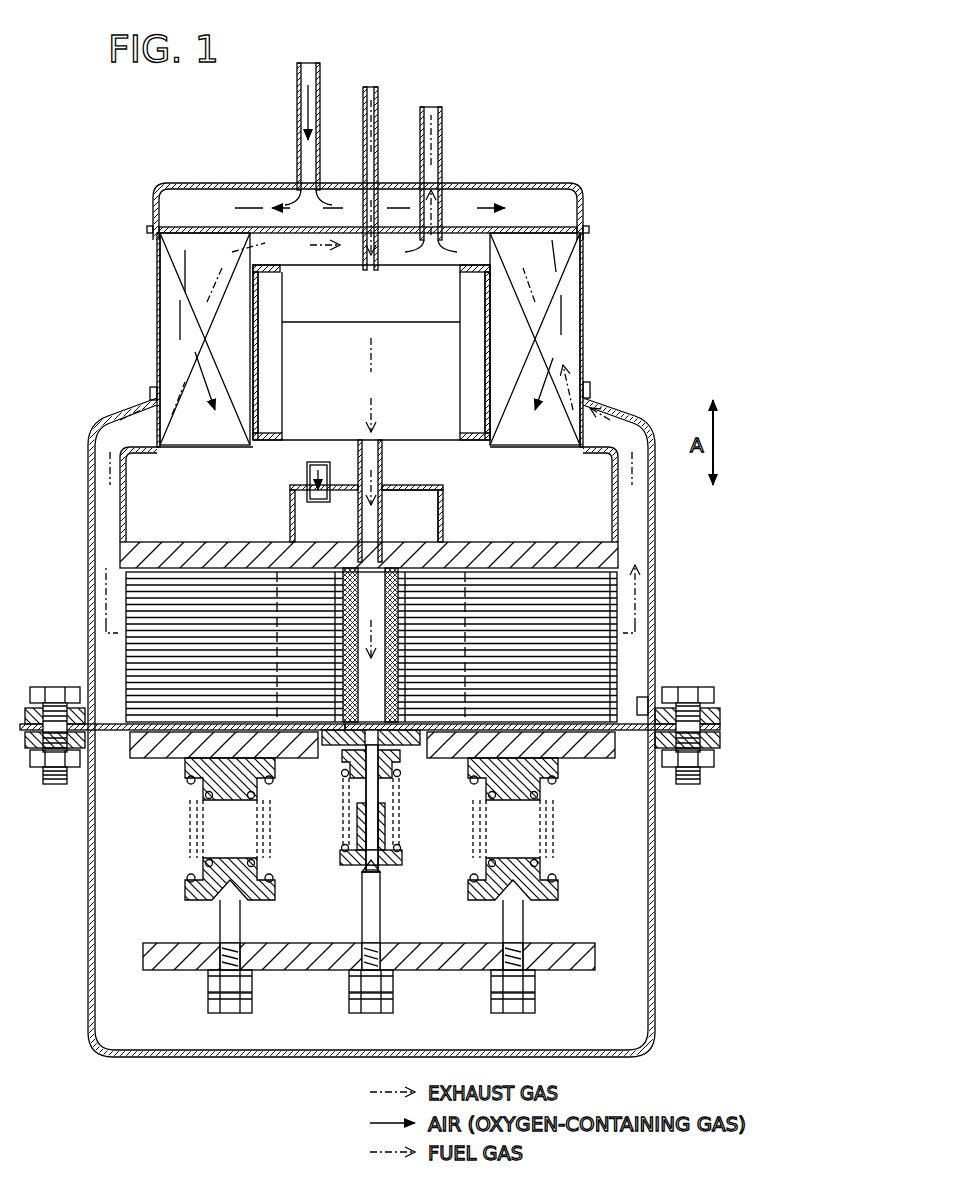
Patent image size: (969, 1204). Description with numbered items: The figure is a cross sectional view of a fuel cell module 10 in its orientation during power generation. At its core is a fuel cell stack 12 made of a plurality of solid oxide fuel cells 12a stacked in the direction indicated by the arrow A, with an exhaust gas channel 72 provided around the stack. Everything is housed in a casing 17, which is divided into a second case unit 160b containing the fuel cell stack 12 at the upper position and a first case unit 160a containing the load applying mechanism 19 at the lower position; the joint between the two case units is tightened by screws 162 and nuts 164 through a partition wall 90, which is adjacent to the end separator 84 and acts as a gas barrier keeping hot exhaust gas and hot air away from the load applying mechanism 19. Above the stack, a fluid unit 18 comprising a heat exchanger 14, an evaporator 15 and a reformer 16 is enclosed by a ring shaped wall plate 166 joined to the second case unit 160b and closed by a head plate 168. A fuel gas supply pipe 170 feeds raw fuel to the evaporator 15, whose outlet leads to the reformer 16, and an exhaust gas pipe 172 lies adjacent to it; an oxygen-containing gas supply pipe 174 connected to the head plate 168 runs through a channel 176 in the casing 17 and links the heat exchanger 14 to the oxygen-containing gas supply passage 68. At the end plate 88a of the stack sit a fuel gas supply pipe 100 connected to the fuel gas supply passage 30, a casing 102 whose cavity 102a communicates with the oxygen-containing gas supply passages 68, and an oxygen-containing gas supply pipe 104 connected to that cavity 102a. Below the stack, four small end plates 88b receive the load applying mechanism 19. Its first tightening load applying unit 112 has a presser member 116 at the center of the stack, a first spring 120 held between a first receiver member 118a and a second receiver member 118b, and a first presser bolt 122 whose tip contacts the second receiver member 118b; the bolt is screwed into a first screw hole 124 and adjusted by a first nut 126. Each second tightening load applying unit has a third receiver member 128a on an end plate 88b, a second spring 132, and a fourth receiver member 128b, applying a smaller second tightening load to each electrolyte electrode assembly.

The fuel cell module 10 is at (337, 576).
The fuel cell stack 12 is at (120, 605).
The solid oxide fuel cell 12a is at (615, 673).
The heat exchanger 14 is at (180, 257).
The evaporator 15 is at (320, 297).
The reformer 16 is at (290, 338).
The casing 17 is at (141, 393).
The fluid unit 18 is at (101, 242).
The load applying mechanism 19 is at (144, 977).
The fuel gas supply passage 30 is at (365, 590).
The oxygen-containing gas supply passage 68 is at (410, 516).
The exhaust gas channel 72 is at (650, 645).
The end separator 84 is at (633, 735).
The end plate 88a is at (532, 548).
The end plate 88b is at (150, 760).
The partition wall 90 is at (113, 735).
The fuel gas supply pipe 100 is at (382, 475).
The casing 102 is at (443, 508).
The cavity 102a is at (290, 508).
The oxygen-containing gas supply pipe 104 is at (307, 472).
The first tightening load applying unit 112 is at (328, 843).
The presser member 116 is at (335, 748).
The first receiver member 118a is at (395, 760).
The second receiver member 118b is at (402, 866).
The first spring 120 is at (402, 852).
The first presser bolt 122 is at (380, 922).
The first screw hole 124 is at (364, 930).
The first nut 126 is at (355, 978).
The third receiver member 128a is at (188, 770).
The fourth receiver member 128b is at (185, 892).
The second spring 132 is at (188, 873).
The first case unit 160a is at (90, 890).
The second case unit 160b is at (90, 622).
The screw 162 is at (52, 690).
The nut 164 is at (58, 768).
The wall plate 166 is at (583, 345).
The head plate 168 is at (520, 183).
The fuel gas supply pipe 170 is at (378, 102).
The exhaust gas pipe 172 is at (442, 132).
The oxygen-containing gas supply pipe 174 is at (297, 128).
The channel 176 is at (192, 206).